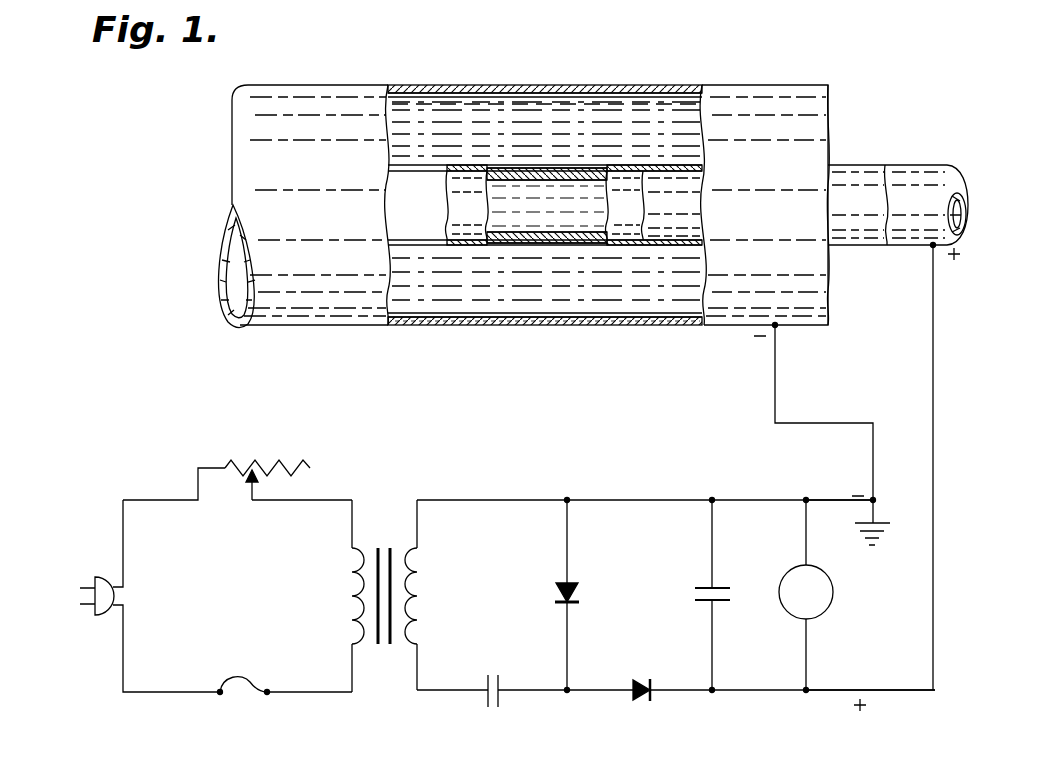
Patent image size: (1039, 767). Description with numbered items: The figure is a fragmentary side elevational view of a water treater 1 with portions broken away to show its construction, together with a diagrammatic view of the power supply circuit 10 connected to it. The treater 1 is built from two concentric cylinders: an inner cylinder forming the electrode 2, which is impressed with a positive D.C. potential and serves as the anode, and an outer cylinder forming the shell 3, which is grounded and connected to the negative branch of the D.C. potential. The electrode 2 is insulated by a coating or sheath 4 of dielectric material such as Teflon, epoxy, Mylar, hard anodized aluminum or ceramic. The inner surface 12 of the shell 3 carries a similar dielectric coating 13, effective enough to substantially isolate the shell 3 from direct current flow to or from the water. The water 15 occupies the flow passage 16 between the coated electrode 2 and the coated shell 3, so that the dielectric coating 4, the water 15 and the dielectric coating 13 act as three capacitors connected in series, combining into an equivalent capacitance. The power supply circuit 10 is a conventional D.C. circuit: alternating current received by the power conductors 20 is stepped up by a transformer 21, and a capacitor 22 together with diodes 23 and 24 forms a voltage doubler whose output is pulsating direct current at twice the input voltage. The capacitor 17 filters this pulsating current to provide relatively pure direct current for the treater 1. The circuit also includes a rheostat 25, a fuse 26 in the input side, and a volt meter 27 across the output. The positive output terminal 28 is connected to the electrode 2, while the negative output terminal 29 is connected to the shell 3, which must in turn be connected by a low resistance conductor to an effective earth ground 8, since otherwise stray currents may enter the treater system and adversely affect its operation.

The treater 1 is at (593, 199).
The electrode 2 is at (460, 202).
The shell 3 is at (747, 105).
The dielectric coating 4 is at (680, 210).
The earth ground 8 is at (880, 522).
The power supply circuit 10 is at (604, 478).
The inner surface 12 is at (524, 189).
The dielectric coating 13 is at (508, 322).
The water 15 is at (637, 140).
The flow passage 16 is at (560, 137).
The capacitor 17 is at (696, 598).
The power conductors 20 is at (148, 500).
The transformer 21 is at (394, 646).
The capacitor 22 is at (500, 700).
The diode 23 is at (560, 590).
The diode 24 is at (636, 698).
The rheostat 25 is at (272, 464).
The fuse 26 is at (246, 696).
The volt meter 27 is at (798, 614).
The positive output terminal 28 is at (820, 692).
The negative output terminal 29 is at (832, 500).